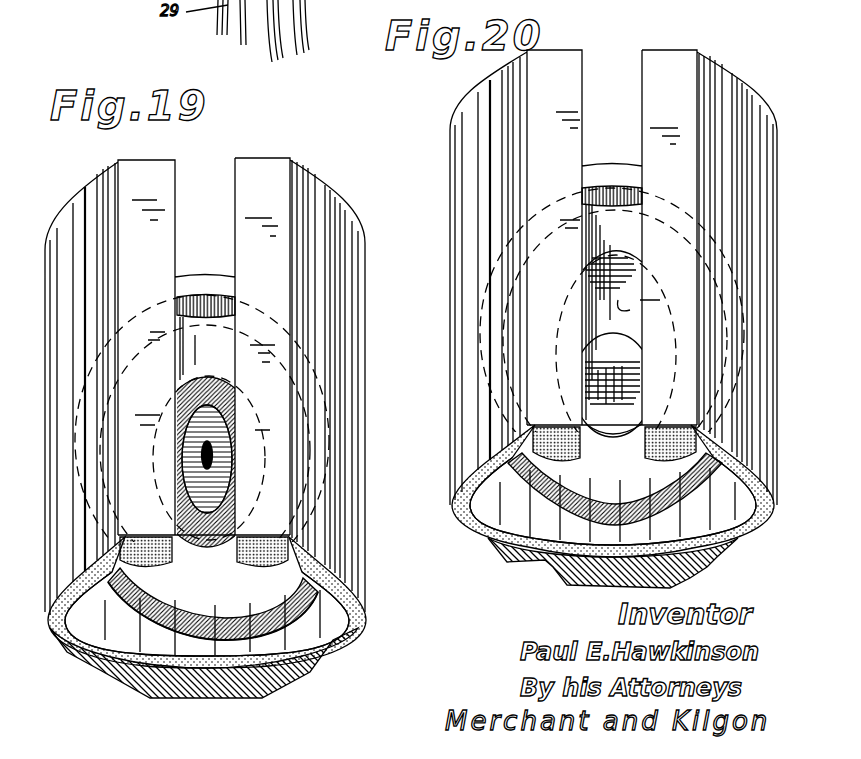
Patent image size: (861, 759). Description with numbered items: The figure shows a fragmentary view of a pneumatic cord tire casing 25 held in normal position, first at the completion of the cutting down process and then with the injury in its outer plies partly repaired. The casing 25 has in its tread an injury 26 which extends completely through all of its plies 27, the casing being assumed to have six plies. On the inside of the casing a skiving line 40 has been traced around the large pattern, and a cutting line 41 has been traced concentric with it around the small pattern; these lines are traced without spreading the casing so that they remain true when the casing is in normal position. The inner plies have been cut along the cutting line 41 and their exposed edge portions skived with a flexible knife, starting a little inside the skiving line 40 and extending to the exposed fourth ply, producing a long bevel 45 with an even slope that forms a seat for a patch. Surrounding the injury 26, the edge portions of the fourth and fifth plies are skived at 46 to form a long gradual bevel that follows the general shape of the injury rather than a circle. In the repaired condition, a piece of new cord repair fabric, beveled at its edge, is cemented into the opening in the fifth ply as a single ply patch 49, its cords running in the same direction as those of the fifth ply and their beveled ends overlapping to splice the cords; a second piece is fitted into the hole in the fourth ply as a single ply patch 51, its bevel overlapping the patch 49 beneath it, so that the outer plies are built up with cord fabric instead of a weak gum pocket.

In FIG. 19, the pneumatic cord tire casing 25 is at (343, 232).
In FIG. 20, the pneumatic cord tire casing 25 is at (752, 130).
In FIG. 19, the injury 26 is at (215, 450).
In FIG. 19, the plies 27 is at (368, 593).
In FIG. 20, the plies 27 is at (748, 467).
In FIG. 19, the skiving line 40 is at (185, 590).
In FIG. 20, the skiving line 40 is at (600, 185).
In FIG. 19, the cutting line 41 is at (182, 625).
In FIG. 20, the cutting line 41 is at (643, 193).
In FIG. 19, the long bevel 45 is at (240, 635).
In FIG. 20, the long bevel 45 is at (613, 193).
In FIG. 19, the skiving 46 is at (173, 392).
In FIG. 20, the single ply patch 49 is at (573, 372).
In FIG. 20, the single ply patch 51 is at (620, 340).